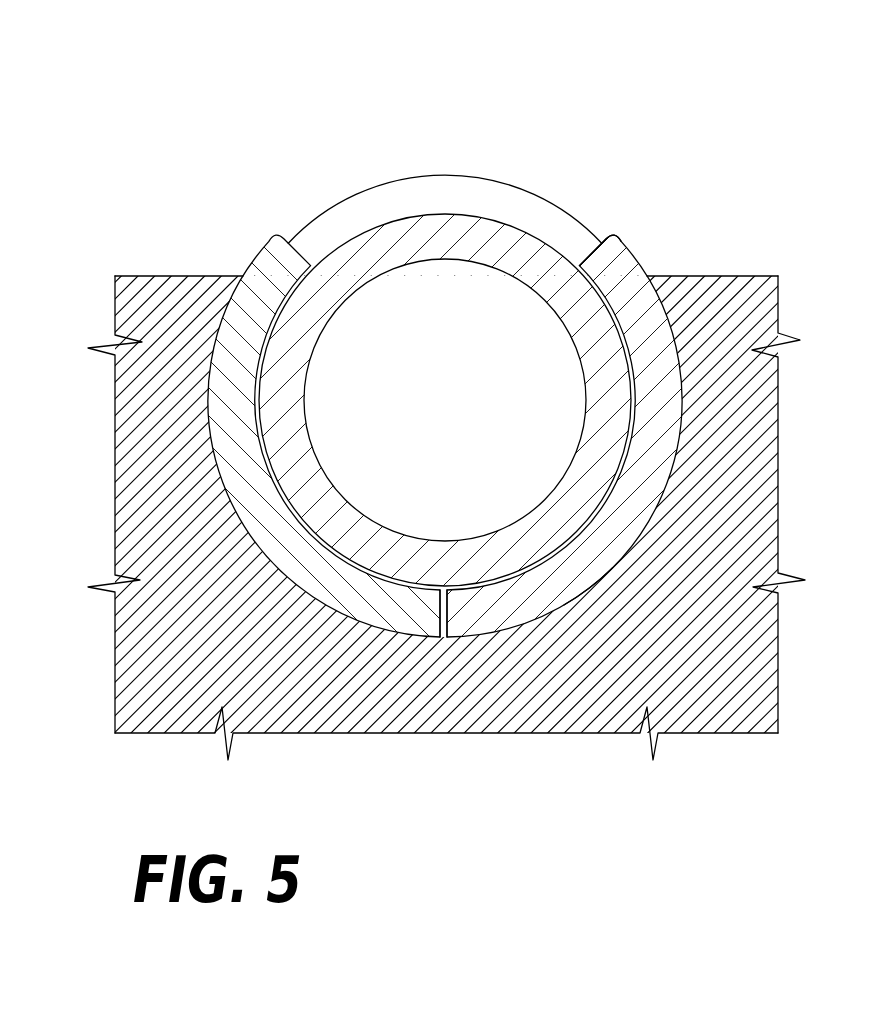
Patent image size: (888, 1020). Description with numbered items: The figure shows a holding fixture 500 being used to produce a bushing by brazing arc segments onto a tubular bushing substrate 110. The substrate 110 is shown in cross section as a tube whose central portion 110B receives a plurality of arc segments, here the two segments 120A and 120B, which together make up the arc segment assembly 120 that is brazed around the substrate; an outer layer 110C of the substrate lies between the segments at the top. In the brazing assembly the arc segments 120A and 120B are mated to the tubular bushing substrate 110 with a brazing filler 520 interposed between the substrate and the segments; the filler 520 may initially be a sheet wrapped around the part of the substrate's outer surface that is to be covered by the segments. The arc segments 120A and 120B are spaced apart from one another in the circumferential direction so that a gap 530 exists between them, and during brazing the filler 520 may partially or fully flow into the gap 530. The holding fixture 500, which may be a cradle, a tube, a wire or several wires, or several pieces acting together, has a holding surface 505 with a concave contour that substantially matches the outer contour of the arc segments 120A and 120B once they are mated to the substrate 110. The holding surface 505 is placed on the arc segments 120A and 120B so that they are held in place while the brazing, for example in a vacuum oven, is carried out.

The tubular bushing substrate 110 is at (444, 311).
The central portion 110B is at (494, 226).
The outer layer of pipe 110C is at (530, 209).
The clamp 120 is at (444, 536).
The arc segment 120A is at (280, 537).
The arc segment 120B is at (646, 502).
The holding fixture 500 is at (143, 300).
The holding surface 505 is at (606, 564).
The brazing filler 520 is at (612, 293).
The gap 530 is at (440, 603).